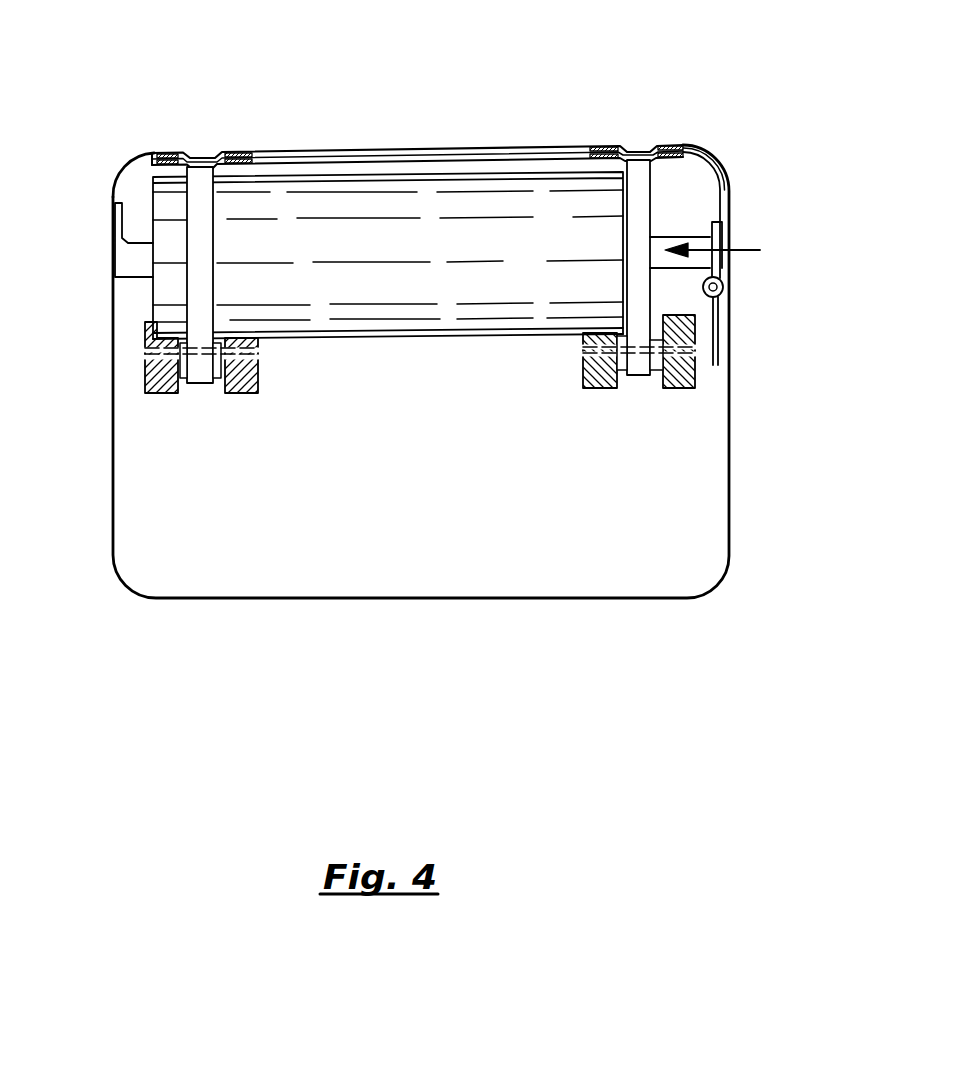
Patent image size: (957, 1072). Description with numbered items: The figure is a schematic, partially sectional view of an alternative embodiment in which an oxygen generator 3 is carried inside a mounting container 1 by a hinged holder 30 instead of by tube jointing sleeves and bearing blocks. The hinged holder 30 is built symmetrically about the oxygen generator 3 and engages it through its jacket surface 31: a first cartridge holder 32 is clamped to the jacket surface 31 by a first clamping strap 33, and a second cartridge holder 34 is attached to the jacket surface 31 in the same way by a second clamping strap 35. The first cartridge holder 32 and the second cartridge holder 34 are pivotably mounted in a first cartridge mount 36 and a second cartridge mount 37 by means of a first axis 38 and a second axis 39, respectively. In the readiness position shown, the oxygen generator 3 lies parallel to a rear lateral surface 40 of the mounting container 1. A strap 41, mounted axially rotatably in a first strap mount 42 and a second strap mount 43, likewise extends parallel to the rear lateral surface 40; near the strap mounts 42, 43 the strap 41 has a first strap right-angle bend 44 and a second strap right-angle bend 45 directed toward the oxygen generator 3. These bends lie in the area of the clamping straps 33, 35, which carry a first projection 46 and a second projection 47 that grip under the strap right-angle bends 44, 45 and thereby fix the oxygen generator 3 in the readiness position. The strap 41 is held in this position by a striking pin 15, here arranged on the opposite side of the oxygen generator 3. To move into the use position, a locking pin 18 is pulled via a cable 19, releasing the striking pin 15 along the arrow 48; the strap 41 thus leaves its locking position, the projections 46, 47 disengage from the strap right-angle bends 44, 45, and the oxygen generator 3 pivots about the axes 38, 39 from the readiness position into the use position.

The mounting container 1 is at (432, 562).
The oxygen generator 3 is at (485, 282).
The striking pin 15 is at (720, 243).
The locking pin 18 is at (724, 287).
The cable 19 is at (718, 323).
The hinged holder 30 is at (82, 367).
The jacket surface 31 is at (410, 335).
The first cartridge holder 32 is at (227, 333).
The first clamping strap 33 is at (203, 226).
The second cartridge holder 34 is at (620, 333).
The second clamping strap 35 is at (650, 175).
The first cartridge mount 36 is at (233, 393).
The second cartridge mount 37 is at (610, 388).
The first axis 38 is at (260, 393).
The second axis 39 is at (577, 388).
The rear lateral surface 40 is at (405, 147).
The strap 41 is at (510, 157).
The first strap mount 42 is at (230, 153).
The second strap mount 43 is at (675, 147).
The first strap right-angle bend 44 is at (140, 150).
The second strap right-angle bend 45 is at (600, 163).
The first projection 46 is at (187, 163).
The second projection 47 is at (638, 210).
The arrow 48 is at (755, 252).